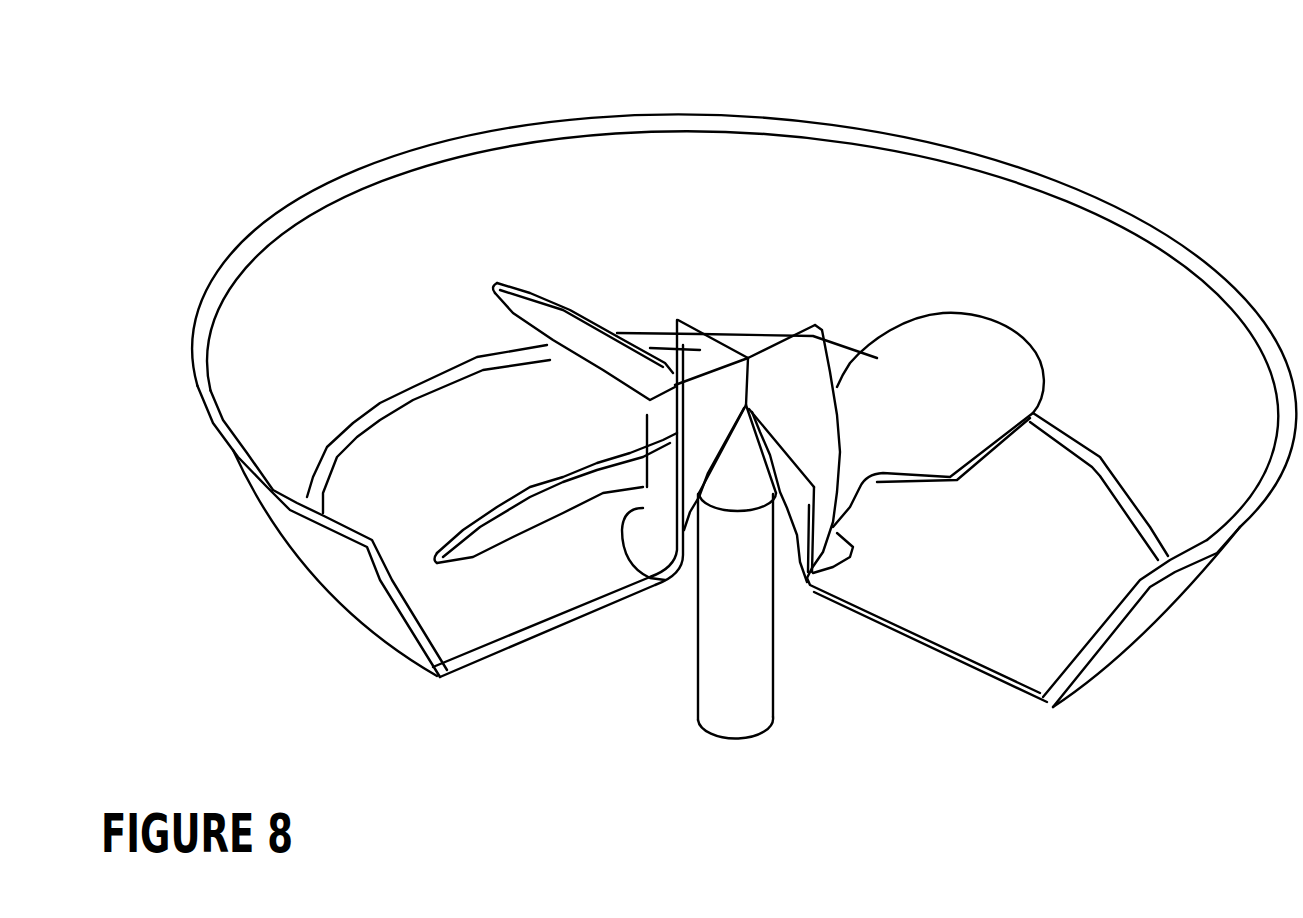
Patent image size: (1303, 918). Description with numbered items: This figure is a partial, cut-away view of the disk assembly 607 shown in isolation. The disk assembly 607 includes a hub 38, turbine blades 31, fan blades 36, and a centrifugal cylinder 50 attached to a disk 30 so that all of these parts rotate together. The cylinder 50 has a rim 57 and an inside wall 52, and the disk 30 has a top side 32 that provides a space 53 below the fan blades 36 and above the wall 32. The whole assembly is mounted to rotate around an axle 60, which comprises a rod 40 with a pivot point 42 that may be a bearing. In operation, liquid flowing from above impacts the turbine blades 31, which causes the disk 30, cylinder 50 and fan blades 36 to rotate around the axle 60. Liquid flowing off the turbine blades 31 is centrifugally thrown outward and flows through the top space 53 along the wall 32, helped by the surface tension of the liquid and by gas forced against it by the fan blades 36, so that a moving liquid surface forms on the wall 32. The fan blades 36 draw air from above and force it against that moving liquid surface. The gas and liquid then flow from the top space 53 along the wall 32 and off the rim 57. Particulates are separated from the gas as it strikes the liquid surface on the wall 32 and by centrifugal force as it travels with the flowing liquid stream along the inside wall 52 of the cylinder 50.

The disk assembly 607 is at (300, 122).
The centrifugal cylinder 50 is at (373, 609).
The inside wall 52 is at (355, 311).
The rim 57 is at (259, 502).
The disk 30 is at (573, 620).
The space 53 is at (528, 572).
The top side 32 is at (478, 443).
The pivot point 42 is at (758, 413).
The turbine blades 31 is at (800, 372).
The fan blades 36 is at (947, 390).
The hub 38 is at (660, 502).
The axle 60 is at (762, 622).
The rod 40 is at (742, 700).